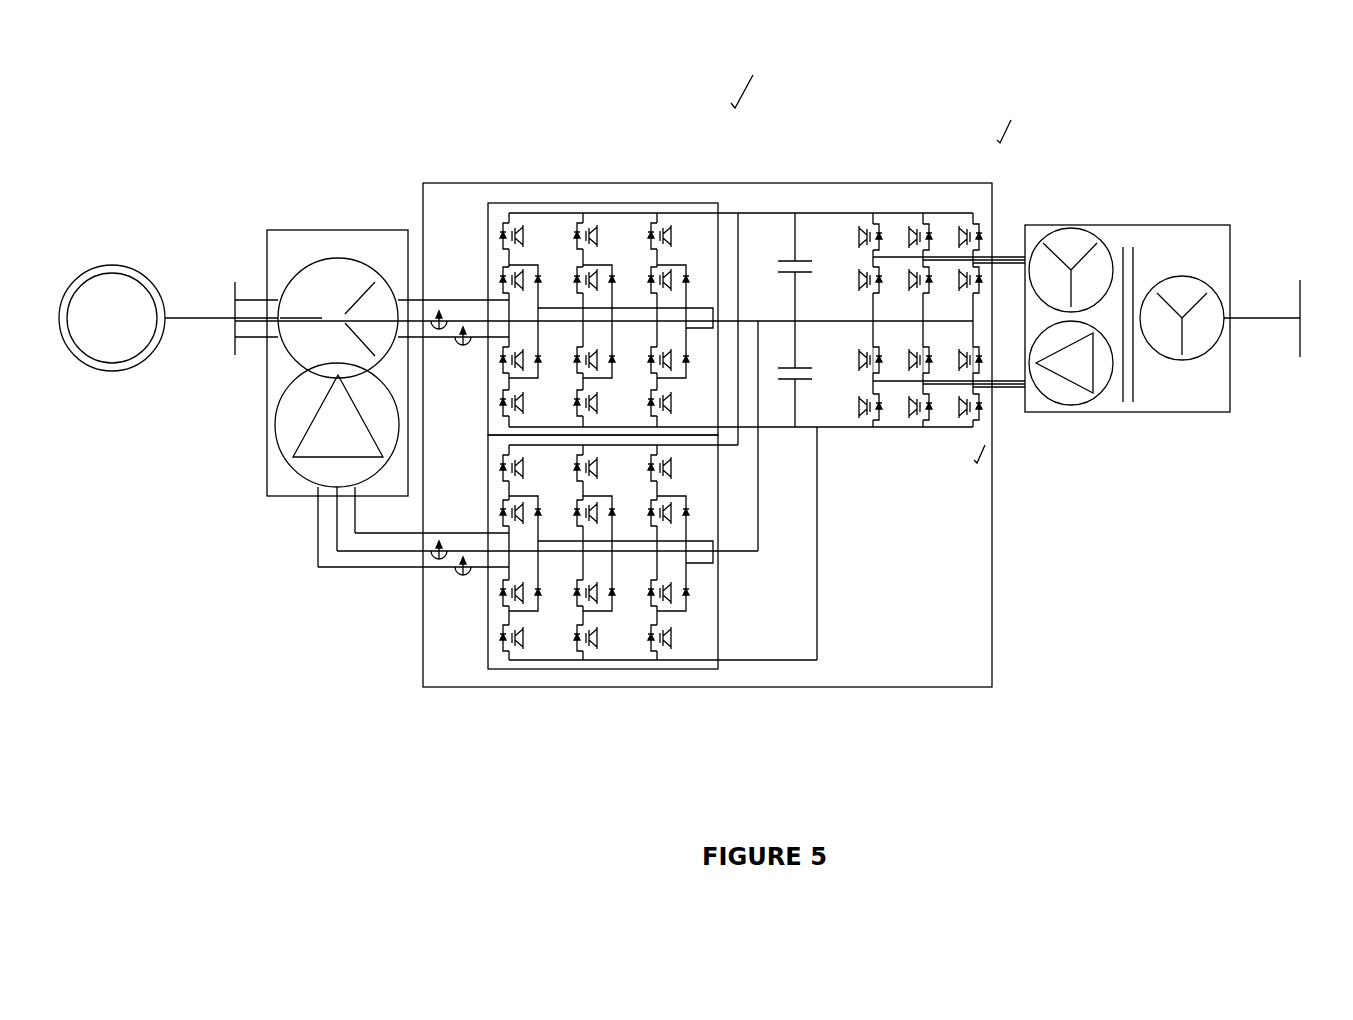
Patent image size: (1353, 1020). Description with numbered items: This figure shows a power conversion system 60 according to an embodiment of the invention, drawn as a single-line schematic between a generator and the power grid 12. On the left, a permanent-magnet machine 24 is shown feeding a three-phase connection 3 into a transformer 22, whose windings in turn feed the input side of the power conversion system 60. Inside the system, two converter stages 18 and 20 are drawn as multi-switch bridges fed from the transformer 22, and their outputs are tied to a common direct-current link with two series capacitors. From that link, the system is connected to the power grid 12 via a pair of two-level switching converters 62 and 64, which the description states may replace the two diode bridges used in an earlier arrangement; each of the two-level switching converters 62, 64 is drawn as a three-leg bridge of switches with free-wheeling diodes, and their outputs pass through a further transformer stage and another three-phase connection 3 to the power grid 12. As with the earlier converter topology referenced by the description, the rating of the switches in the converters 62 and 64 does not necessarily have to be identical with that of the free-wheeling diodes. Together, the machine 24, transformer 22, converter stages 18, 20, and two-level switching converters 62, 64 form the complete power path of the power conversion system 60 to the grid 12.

The permanent magnet generator 24 is at (112, 263).
The three-phase connection 3 is at (187, 337).
The transformer 22 is at (251, 492).
The power conversion system 60 is at (668, 168).
The first converter 18 is at (527, 202).
The second converter 20 is at (552, 665).
The two-level switching converter 62 is at (938, 206).
The two-level switching converter 64 is at (927, 438).
The power grid 12 is at (1303, 277).